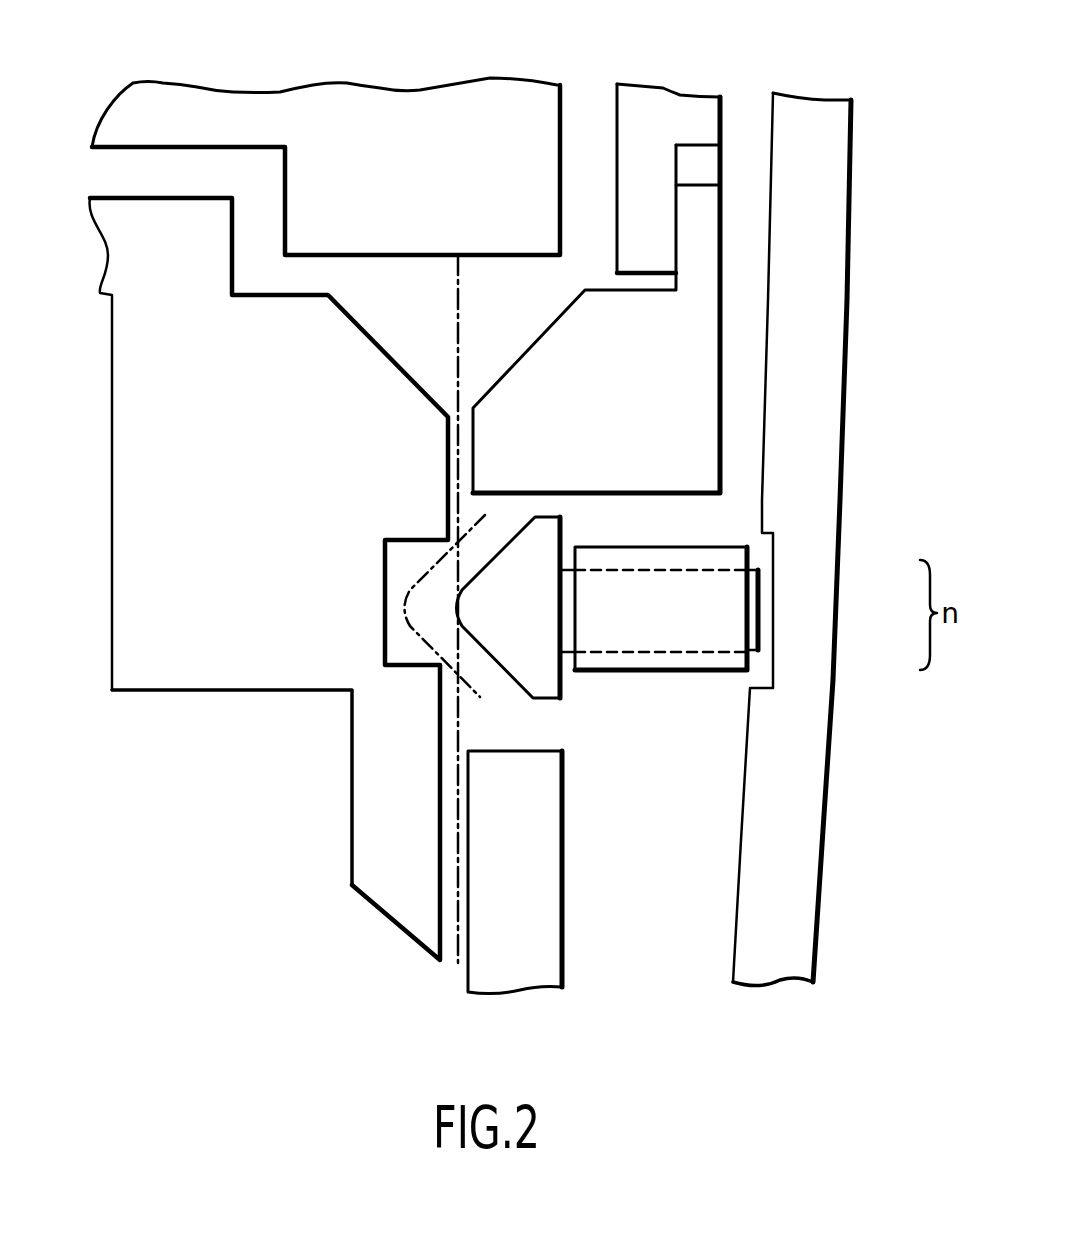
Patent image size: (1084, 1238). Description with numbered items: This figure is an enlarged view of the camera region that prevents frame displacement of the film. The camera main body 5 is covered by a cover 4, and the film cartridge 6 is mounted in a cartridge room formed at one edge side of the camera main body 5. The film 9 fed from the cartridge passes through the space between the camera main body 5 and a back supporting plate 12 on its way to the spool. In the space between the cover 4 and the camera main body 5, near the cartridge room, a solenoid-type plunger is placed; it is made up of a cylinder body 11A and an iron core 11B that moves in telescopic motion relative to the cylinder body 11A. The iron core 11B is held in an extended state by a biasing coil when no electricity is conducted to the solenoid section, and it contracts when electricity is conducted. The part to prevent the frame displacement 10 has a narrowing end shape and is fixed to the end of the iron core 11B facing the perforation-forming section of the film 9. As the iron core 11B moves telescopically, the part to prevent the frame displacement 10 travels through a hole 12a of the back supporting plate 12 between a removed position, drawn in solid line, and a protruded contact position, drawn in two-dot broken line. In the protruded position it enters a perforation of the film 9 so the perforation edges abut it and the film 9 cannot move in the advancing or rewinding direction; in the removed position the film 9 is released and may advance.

The cover 4 is at (812, 492).
The camera main body 5 is at (178, 672).
The film cartridge 6 is at (388, 115).
The film 9 is at (458, 963).
The part to prevent the frame displacement 10 is at (547, 672).
The cylinder body 11A is at (760, 657).
The iron core 11B is at (760, 618).
The back supporting plate 12 is at (705, 362).
The hole 12a is at (562, 822).